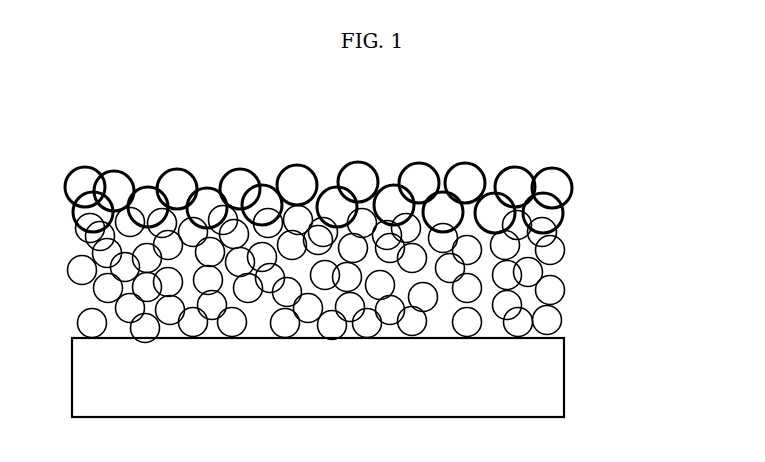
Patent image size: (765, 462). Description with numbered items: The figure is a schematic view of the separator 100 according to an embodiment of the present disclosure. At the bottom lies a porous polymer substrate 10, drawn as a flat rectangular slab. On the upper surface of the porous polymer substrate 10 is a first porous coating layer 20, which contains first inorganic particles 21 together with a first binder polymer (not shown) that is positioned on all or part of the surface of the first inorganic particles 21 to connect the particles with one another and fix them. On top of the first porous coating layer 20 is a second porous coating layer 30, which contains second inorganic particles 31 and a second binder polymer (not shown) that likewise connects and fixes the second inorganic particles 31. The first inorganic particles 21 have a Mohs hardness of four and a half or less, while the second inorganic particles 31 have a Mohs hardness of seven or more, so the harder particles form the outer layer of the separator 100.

The separator 100 is at (157, 110).
The porous polymer substrate 10 is at (573, 368).
The first porous coating layer 20 is at (622, 265).
The first inorganic particles 21 is at (565, 292).
The second porous coating layer 30 is at (622, 196).
The second inorganic particles 31 is at (572, 190).